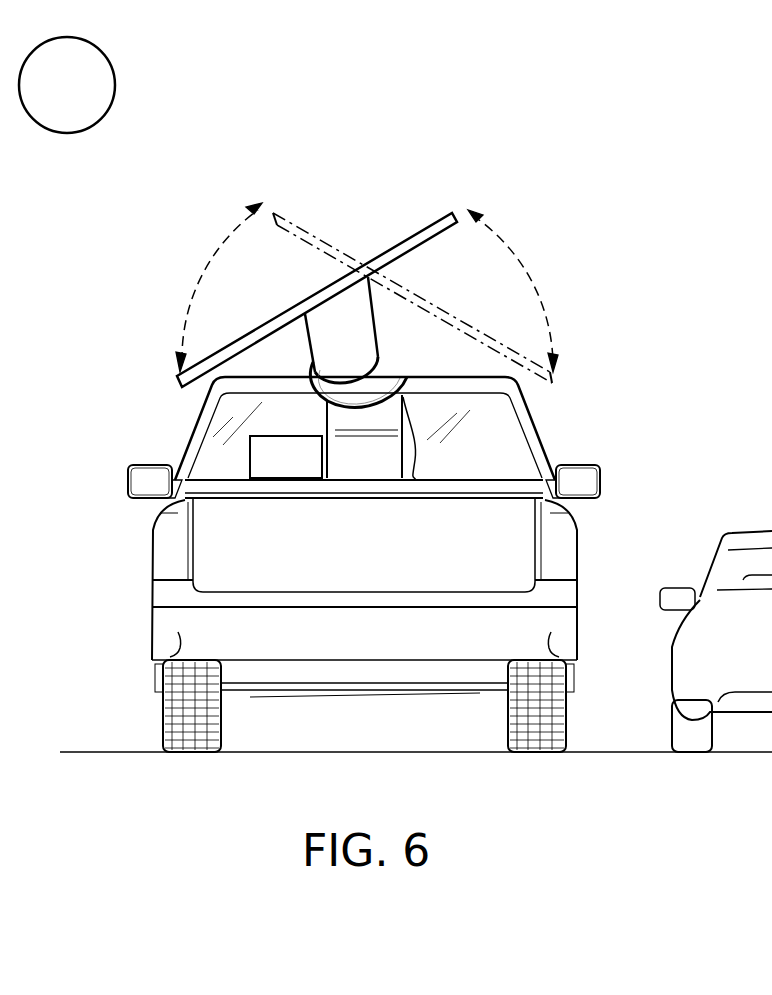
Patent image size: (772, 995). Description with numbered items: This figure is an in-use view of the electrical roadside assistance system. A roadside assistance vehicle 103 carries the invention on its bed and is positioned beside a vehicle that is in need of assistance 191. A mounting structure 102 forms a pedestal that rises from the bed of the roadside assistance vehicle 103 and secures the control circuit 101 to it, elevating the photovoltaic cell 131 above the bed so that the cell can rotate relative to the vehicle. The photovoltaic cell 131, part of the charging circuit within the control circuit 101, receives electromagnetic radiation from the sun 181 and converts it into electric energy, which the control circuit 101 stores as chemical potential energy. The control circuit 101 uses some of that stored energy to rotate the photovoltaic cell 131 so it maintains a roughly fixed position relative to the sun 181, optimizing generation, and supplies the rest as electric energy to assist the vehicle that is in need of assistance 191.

The control circuit 101 is at (465, 293).
The mounting structure 102 is at (378, 450).
The roadside assistance vehicle 103 is at (567, 555).
The photovoltaic cell 131 is at (385, 243).
The sun 181 is at (85, 112).
The vehicle that is in need of assistance 191 is at (752, 543).